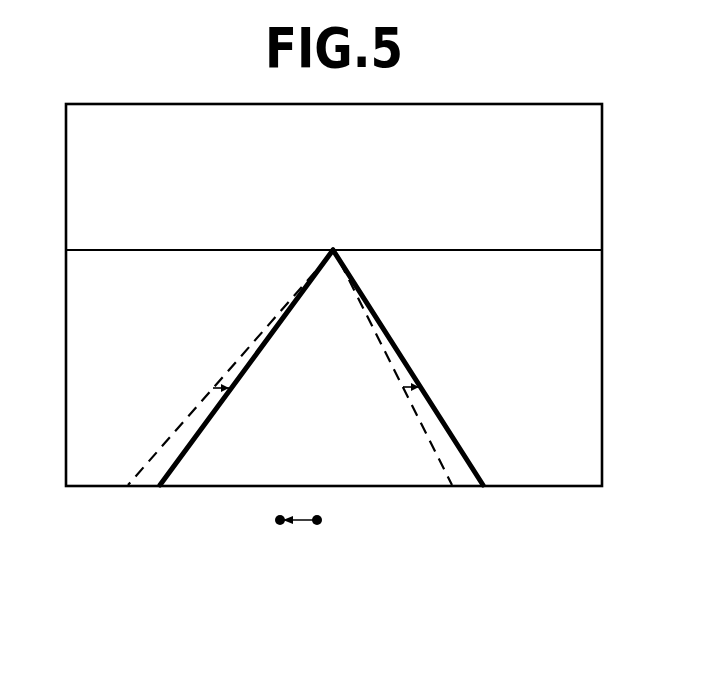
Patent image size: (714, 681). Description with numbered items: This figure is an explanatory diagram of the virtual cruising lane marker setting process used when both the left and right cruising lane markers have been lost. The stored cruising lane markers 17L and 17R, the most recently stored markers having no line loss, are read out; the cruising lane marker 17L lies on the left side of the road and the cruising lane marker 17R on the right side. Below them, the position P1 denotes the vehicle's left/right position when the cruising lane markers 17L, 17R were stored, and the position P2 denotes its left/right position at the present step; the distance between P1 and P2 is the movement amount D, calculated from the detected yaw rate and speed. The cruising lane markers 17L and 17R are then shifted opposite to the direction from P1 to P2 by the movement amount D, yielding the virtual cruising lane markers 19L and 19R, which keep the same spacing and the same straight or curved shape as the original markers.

The cruising lane marker 17L is at (186, 418).
The cruising lane marker 17R is at (421, 421).
The virtual cruising lane marker 19L is at (265, 345).
The virtual cruising lane marker 19R is at (443, 421).
The movement amount D is at (220, 388).
The position P1 is at (333, 521).
The position P2 is at (264, 521).